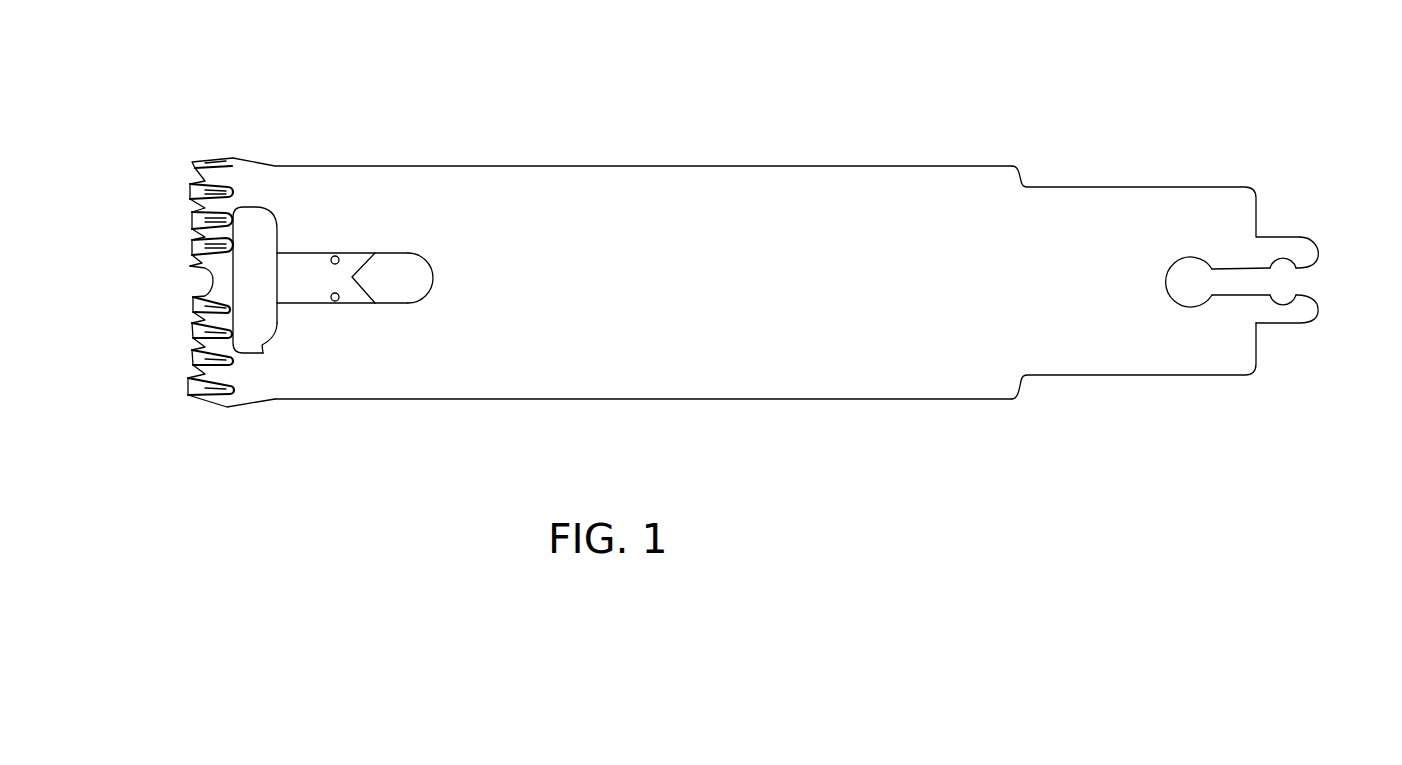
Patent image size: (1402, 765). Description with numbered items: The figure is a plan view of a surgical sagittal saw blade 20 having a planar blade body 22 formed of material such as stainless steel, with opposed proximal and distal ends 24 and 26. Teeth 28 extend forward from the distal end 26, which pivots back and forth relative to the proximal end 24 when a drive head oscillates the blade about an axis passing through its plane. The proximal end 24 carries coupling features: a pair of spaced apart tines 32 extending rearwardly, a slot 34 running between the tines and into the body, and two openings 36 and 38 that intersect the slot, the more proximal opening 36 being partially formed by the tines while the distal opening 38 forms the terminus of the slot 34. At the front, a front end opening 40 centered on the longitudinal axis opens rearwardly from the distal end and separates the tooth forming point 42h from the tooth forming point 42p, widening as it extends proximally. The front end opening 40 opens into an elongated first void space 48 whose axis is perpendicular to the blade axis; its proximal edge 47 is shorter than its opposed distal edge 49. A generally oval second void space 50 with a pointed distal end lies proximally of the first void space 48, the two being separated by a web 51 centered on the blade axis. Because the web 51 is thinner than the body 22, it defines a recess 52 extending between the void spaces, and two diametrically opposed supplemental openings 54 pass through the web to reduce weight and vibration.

The surgical sagittal saw blade 20 is at (673, 140).
The blade body 22 is at (537, 218).
The proximal end 24 is at (1141, 174).
The distal end 26 is at (238, 425).
The teeth 28 is at (151, 295).
The tines 32 is at (1282, 248).
The slot 34 is at (1236, 272).
The opening 36 is at (1280, 277).
The opening 38 is at (1192, 283).
The front end opening 40 is at (207, 283).
The tooth forming point 42h is at (190, 267).
The tooth forming point 42p is at (152, 390).
The proximal edge 47 is at (258, 340).
The first void space 48 is at (257, 222).
The distal edge 49 is at (230, 387).
The second void space 50 is at (410, 283).
The web 51 is at (280, 286).
The recess 52 is at (295, 298).
The supplemental openings 54 is at (338, 257).